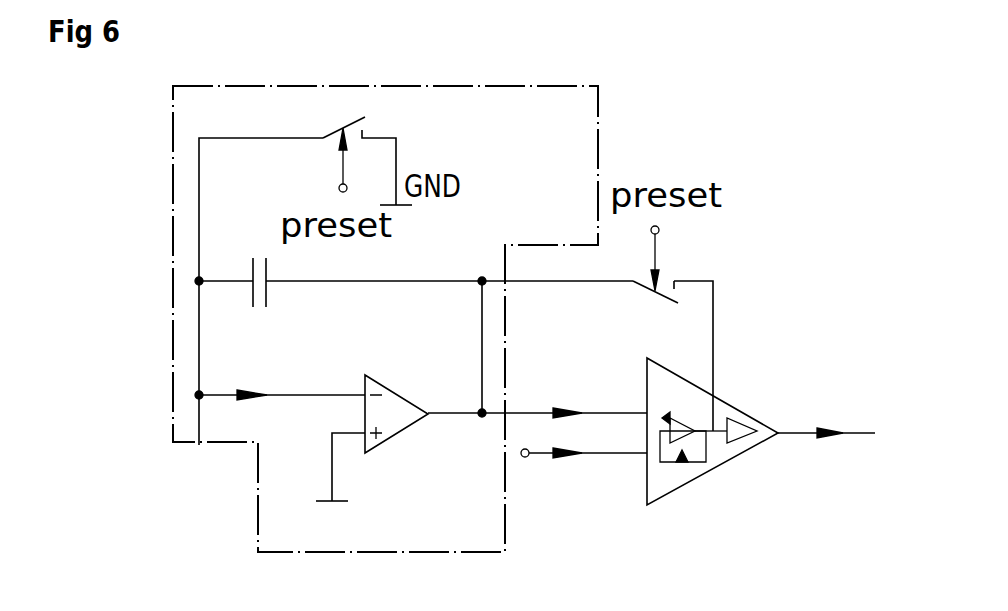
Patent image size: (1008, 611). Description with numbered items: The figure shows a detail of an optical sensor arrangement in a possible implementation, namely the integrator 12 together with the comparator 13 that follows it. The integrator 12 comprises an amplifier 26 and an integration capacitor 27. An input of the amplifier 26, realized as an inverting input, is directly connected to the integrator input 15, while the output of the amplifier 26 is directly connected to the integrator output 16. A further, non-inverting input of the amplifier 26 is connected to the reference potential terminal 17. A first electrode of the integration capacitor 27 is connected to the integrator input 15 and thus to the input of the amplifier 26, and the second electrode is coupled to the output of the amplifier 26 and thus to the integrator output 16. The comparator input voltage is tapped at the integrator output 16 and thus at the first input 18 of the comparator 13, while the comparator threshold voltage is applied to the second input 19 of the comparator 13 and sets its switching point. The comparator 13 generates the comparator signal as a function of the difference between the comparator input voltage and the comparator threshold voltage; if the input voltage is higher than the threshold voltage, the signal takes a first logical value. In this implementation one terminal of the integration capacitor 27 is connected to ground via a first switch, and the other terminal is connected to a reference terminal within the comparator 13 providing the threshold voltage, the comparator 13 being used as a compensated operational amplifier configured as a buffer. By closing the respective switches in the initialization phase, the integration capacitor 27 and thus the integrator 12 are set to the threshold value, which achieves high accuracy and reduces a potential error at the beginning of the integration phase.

The integrator 12 is at (172, 170).
The integration capacitor 27 is at (256, 256).
The integrator input 15 is at (202, 392).
The integrator output 16 is at (478, 405).
The reference potential terminal 17 is at (323, 500).
The amplifier 26 is at (399, 442).
The first input of the comparator 18 is at (642, 410).
The second input of the comparator 19 is at (643, 456).
The comparator 13 is at (706, 475).